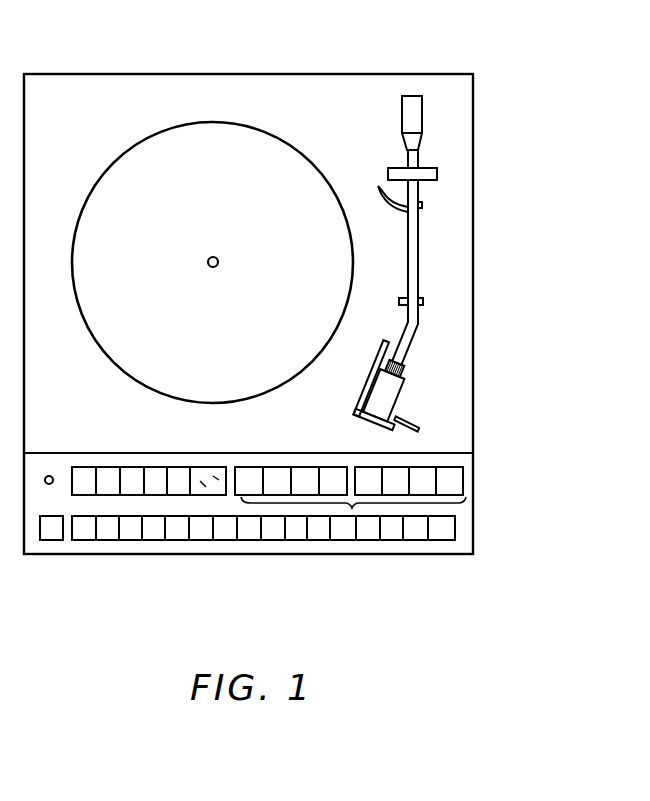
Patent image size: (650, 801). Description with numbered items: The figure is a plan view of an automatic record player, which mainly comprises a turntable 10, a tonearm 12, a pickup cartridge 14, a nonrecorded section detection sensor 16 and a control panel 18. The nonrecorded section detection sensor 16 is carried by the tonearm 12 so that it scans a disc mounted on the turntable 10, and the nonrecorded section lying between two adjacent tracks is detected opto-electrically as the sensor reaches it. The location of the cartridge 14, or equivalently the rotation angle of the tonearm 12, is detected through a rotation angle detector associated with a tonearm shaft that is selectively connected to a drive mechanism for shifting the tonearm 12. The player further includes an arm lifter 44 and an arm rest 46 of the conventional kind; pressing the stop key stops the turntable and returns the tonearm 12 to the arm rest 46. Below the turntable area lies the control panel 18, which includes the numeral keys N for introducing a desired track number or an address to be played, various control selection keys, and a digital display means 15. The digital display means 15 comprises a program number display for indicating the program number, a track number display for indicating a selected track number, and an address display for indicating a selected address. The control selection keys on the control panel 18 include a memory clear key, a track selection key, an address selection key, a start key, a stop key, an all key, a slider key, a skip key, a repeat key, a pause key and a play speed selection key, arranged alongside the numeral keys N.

The turntable 10 is at (152, 157).
The tonearm 12 is at (413, 245).
The pickup cartridge 14 is at (390, 397).
The nonrecorded section detection sensor 16 is at (357, 418).
The arm lifter 44 is at (378, 188).
The arm rest 46 is at (423, 300).
The digital display means 15 is at (358, 508).
The control panel 18 is at (470, 532).
The numeral keys N is at (153, 542).